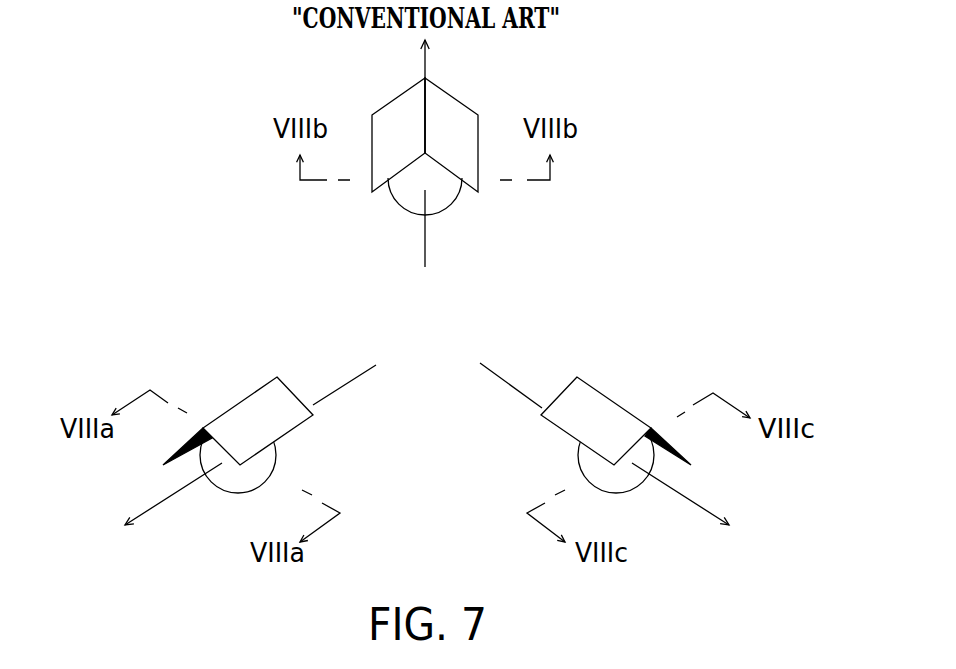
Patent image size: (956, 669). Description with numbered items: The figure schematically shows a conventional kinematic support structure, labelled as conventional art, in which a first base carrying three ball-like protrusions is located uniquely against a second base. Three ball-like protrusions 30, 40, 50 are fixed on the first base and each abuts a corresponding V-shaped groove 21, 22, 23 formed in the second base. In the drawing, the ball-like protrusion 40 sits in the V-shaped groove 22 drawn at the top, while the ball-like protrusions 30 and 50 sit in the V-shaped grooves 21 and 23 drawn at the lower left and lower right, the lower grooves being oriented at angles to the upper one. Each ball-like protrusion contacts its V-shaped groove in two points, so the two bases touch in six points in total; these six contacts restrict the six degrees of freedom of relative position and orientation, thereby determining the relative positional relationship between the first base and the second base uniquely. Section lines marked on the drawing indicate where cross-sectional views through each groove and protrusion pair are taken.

The V-shaped groove 21 is at (200, 441).
The V-shaped groove 22 is at (462, 194).
The V-shaped groove 23 is at (655, 445).
The ball-like protrusion 30 is at (234, 473).
The ball-like protrusion 40 is at (400, 200).
The ball-like protrusion 50 is at (618, 473).